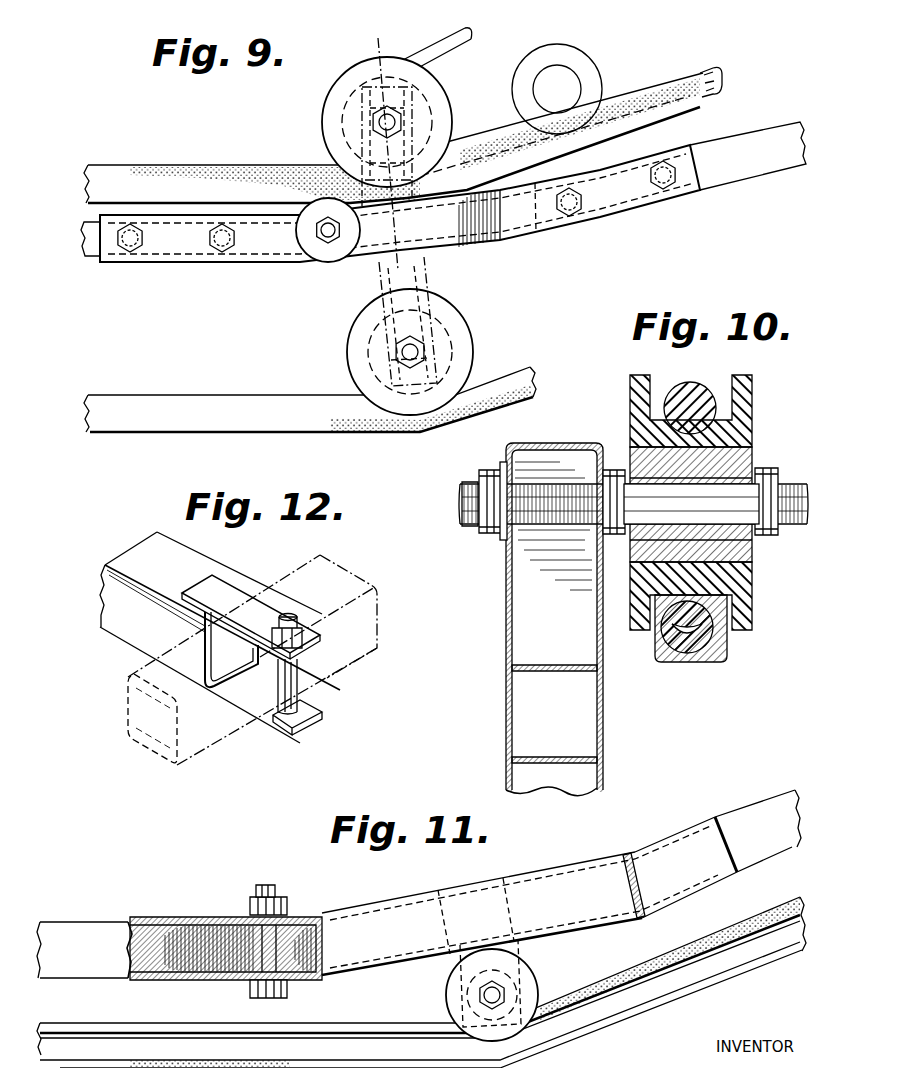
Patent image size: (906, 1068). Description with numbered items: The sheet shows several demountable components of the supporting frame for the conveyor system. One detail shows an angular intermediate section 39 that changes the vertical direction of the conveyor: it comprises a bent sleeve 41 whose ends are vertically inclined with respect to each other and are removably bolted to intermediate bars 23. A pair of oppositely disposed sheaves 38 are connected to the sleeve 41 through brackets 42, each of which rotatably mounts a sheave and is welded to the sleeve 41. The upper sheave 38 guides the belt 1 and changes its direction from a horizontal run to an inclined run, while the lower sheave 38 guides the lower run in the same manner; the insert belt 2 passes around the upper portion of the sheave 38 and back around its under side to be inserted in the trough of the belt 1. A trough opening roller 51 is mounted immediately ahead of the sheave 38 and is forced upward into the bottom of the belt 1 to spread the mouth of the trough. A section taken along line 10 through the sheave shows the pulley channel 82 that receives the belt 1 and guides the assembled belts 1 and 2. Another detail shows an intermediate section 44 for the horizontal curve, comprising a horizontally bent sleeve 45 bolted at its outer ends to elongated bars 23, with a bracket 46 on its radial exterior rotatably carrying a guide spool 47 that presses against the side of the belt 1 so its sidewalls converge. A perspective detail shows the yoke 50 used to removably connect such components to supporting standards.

In FIG. 9, the belt 1 is at (230, 163).
In FIG. 10, the belt 1 is at (692, 660).
In FIG. 11, the belt 1 is at (736, 931).
In FIG. 9, the insert belt 2 is at (446, 52).
In FIG. 10, the insert belt 2 is at (694, 394).
In FIG. 9, the section line 10— 10 is at (360, 37).
In FIG. 9, the intermediate bars 23 is at (93, 262).
In FIG. 12, the intermediate bars 23 is at (346, 648).
In FIG. 11, the intermediate bars 23 is at (116, 926).
In FIG. 9, the sheave 38 is at (333, 99).
In FIG. 10, the sheave 38 is at (752, 582).
In FIG. 9, the intermediate section 39 is at (486, 258).
In FIG. 9, the bent sleeve 41 is at (283, 266).
In FIG. 10, the bent sleeve 41 is at (506, 705).
In FIG. 9, the brackets 42 is at (432, 108).
In FIG. 10, the brackets 42 is at (506, 604).
In FIG. 11, the intermediate section 44 is at (560, 862).
In FIG. 11, the horizontally bent sleeve 45 is at (372, 908).
In FIG. 11, the bracket 46 is at (518, 942).
In FIG. 11, the guide spool 47 is at (531, 990).
In FIG. 12, the yoke 50 is at (229, 598).
In FIG. 9, the trough opening roller 51 is at (321, 262).
In FIG. 10, the channel 82 is at (752, 426).